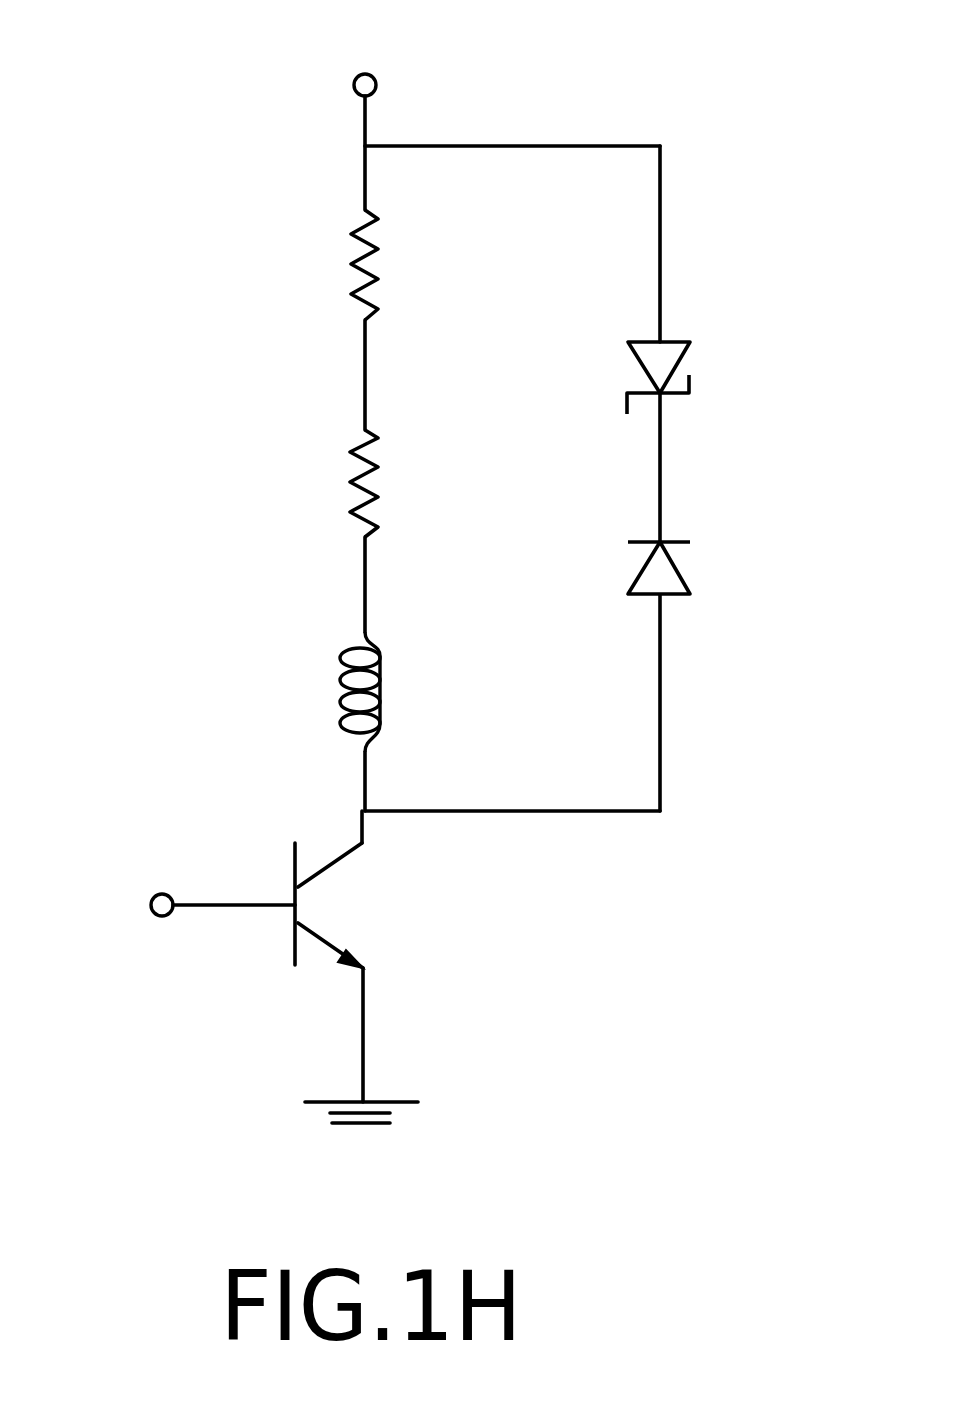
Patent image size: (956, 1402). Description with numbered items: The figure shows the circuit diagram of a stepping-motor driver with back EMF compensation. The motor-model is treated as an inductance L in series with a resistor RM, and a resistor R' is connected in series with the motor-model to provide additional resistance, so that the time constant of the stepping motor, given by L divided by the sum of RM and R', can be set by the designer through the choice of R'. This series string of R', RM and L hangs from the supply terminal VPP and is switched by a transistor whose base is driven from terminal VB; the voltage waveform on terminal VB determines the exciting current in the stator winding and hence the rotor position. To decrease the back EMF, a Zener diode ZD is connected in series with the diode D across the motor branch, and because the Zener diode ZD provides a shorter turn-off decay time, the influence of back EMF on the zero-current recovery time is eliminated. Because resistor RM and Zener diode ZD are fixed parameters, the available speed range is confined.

The supply voltage terminal VPP is at (377, 48).
The resistor R' is at (393, 265).
The resistor RM is at (405, 483).
The inductance L is at (383, 692).
The Zener diode ZD is at (689, 393).
The diode D is at (690, 594).
The terminal VB is at (218, 905).